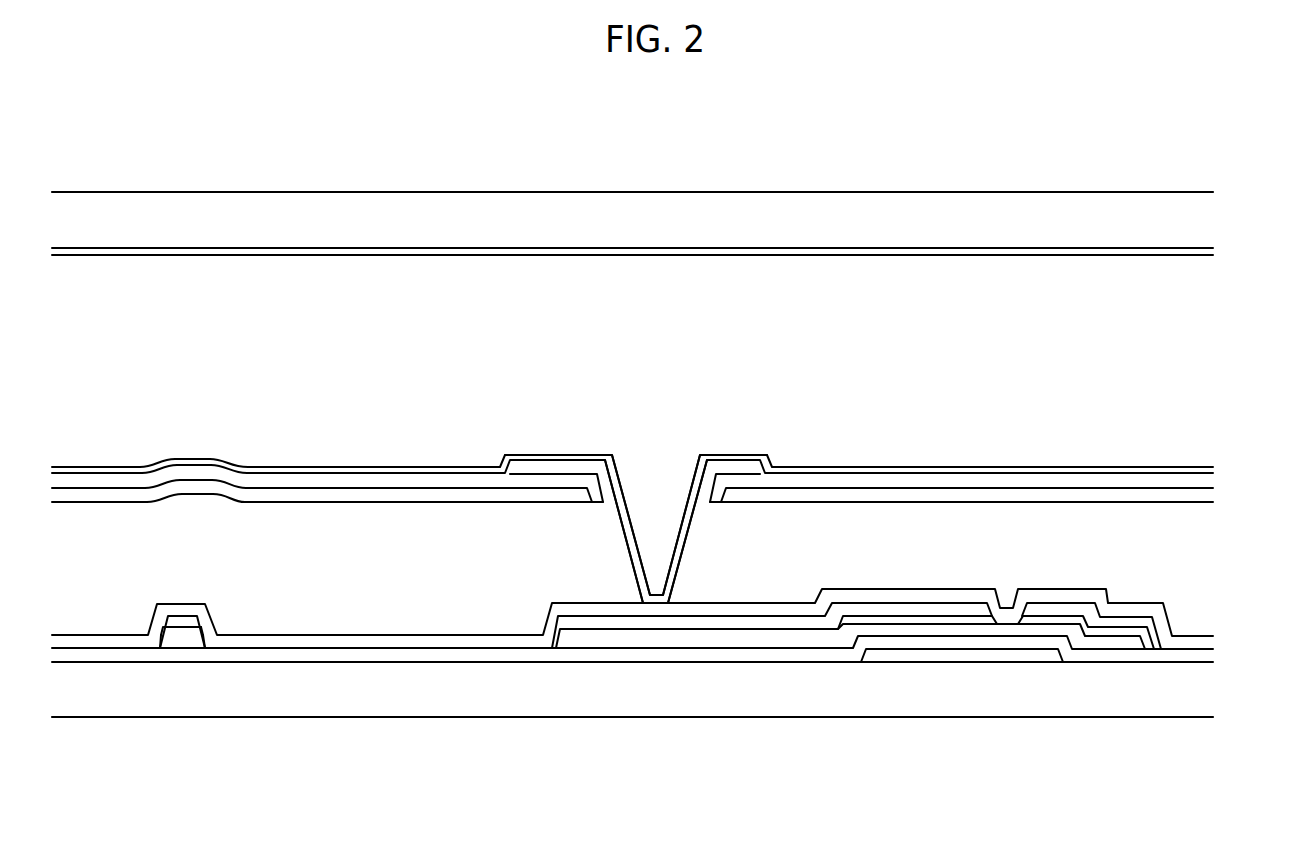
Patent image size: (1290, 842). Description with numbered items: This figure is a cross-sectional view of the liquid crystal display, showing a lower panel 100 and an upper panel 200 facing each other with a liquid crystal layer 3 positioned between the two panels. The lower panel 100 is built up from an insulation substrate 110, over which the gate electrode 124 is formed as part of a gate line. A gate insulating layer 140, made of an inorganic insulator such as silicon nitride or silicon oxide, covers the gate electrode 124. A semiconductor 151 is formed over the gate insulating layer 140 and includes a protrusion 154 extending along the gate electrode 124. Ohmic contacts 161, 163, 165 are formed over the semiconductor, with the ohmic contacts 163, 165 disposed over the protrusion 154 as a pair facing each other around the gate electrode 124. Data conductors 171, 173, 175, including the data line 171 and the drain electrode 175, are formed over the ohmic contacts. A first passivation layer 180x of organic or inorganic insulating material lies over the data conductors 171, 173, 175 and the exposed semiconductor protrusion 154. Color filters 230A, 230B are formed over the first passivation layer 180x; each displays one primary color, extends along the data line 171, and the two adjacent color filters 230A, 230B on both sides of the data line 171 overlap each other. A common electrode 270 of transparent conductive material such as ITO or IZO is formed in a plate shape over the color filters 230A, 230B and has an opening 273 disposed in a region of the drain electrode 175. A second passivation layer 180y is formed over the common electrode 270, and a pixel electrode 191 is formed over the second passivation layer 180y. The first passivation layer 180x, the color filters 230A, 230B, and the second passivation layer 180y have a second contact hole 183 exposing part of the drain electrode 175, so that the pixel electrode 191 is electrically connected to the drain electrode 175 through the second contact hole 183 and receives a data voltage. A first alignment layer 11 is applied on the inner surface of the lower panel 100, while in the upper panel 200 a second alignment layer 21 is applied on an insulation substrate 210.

The upper panel 200 is at (661, 196).
The insulation substrate 210 is at (428, 213).
The second alignment layer 21 is at (594, 255).
The liquid crystal layer 3 is at (1222, 256).
The lower panel 100 is at (661, 595).
The insulation substrate 110 is at (575, 700).
The gate electrode 124 is at (1015, 652).
The gate insulating layer 140 is at (670, 655).
The protrusion 154 is at (940, 622).
The ohmic contact 163 is at (1087, 620).
The ohmic contact 165 is at (808, 628).
The data conductor 173 is at (1128, 625).
The drain electrode 175 is at (890, 607).
The data line 171 is at (173, 625).
The ohmic contact 161 is at (188, 633).
The semiconductor 151 is at (198, 643).
The first passivation layer 180x is at (1185, 642).
The second passivation layer 180y is at (1093, 483).
The color filter 230A is at (88, 597).
The color filter 230B is at (420, 590).
The common electrode 270 is at (311, 490).
The opening 273 is at (593, 497).
The first alignment layer 11 is at (1004, 475).
The pixel electrode 191 is at (521, 462).
The second contact hole 183 is at (688, 523).